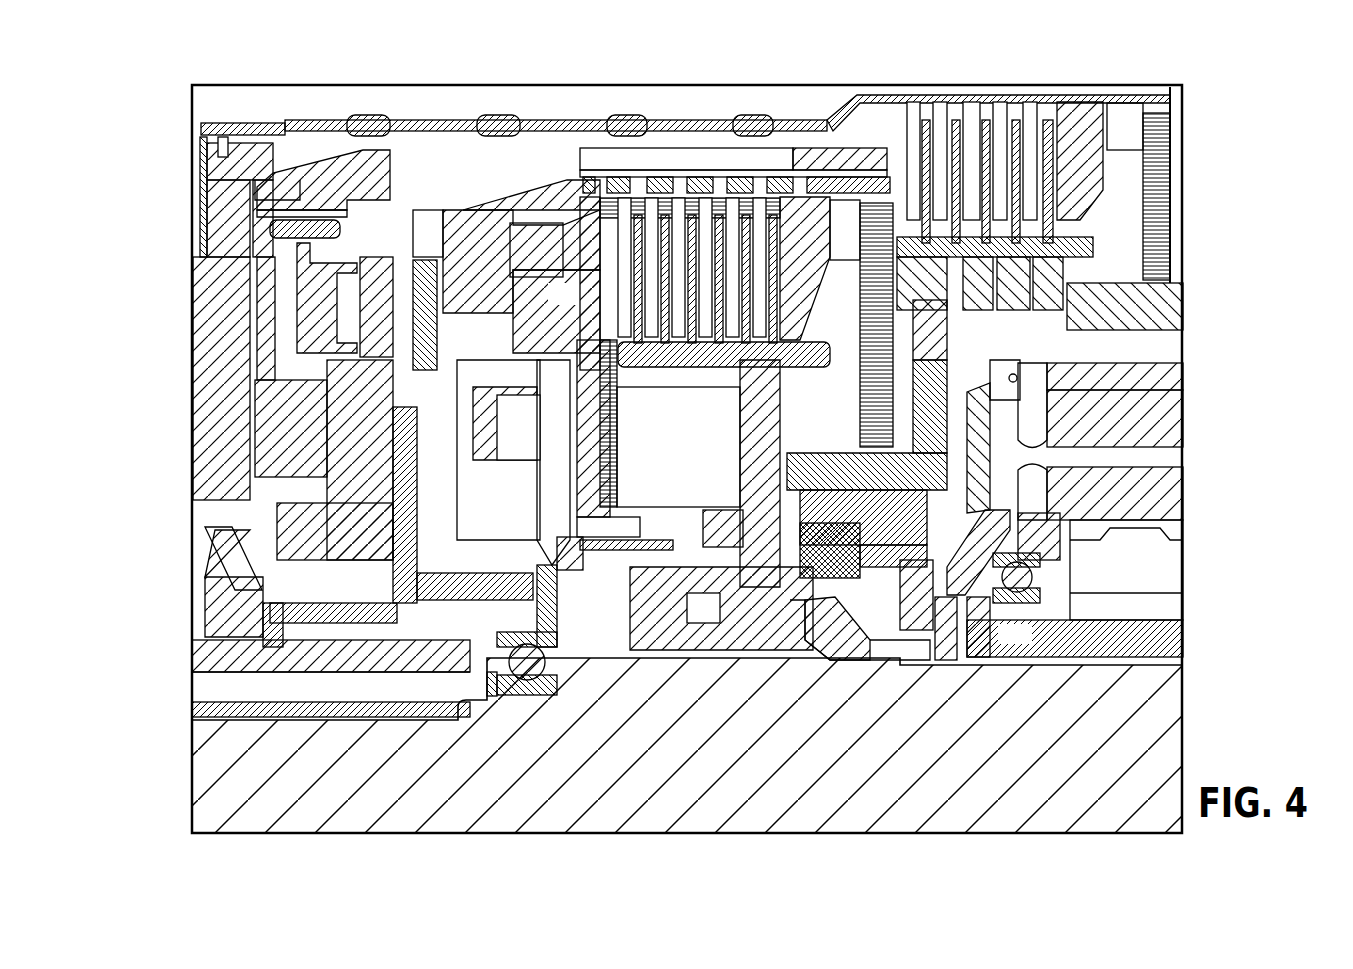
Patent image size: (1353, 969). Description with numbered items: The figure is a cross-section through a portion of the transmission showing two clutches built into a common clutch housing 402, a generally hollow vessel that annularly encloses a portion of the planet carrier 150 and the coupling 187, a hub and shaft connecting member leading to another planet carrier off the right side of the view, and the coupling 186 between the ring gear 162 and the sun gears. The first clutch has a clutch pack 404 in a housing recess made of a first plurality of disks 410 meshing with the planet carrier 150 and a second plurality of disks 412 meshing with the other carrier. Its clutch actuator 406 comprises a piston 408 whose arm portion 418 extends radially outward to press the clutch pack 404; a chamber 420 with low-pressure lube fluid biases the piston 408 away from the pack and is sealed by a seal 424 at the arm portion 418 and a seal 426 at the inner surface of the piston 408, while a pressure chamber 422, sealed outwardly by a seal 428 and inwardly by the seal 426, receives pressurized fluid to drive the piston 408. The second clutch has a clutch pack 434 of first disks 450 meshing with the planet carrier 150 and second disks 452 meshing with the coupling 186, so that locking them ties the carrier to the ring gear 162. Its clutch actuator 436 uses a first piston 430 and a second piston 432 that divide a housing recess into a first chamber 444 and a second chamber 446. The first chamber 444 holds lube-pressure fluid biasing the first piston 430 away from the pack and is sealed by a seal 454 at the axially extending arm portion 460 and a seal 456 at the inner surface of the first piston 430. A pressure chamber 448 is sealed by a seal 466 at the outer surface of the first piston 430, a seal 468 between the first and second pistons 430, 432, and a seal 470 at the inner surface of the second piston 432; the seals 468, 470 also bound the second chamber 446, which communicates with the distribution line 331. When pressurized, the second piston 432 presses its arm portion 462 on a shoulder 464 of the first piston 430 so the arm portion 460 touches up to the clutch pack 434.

The clutch housing 402 is at (345, 188).
The seal 468 is at (330, 158).
The seal 466 is at (340, 178).
The seal 456 is at (362, 240).
The first chamber 444 is at (430, 232).
The seal 454 is at (456, 212).
The seal 428 is at (497, 170).
The first piston 430 is at (545, 215).
The first plurality of disks 410 is at (640, 205).
The arm portion 460 is at (682, 160).
The clutch pack 404 is at (708, 252).
The clutch pack 434 is at (1005, 170).
The first plurality of disks 450 is at (1030, 110).
The pressure chamber 448 is at (302, 243).
The shoulder 464 is at (320, 218).
The arm portion 462 is at (300, 246).
The second piston 432 is at (292, 322).
The clutch actuator 436 is at (222, 333).
The second chamber 446 is at (452, 432).
The seal 470 is at (392, 455).
The planet carrier 150 is at (218, 535).
The clutch actuator 406 is at (452, 510).
The arm portion 418 is at (583, 304).
The distribution line 331 is at (465, 380).
The seal 424 is at (618, 418).
The second plurality of disks 452 is at (1162, 316).
The ring gear 162 is at (1162, 330).
The coupling 186 is at (1030, 645).
The pressure chamber 422 is at (398, 650).
The seal 426 is at (505, 562).
The piston 408 is at (528, 690).
The chamber 420 is at (556, 530).
The second plurality of disks 412 is at (768, 568).
The coupling 187 is at (605, 585).